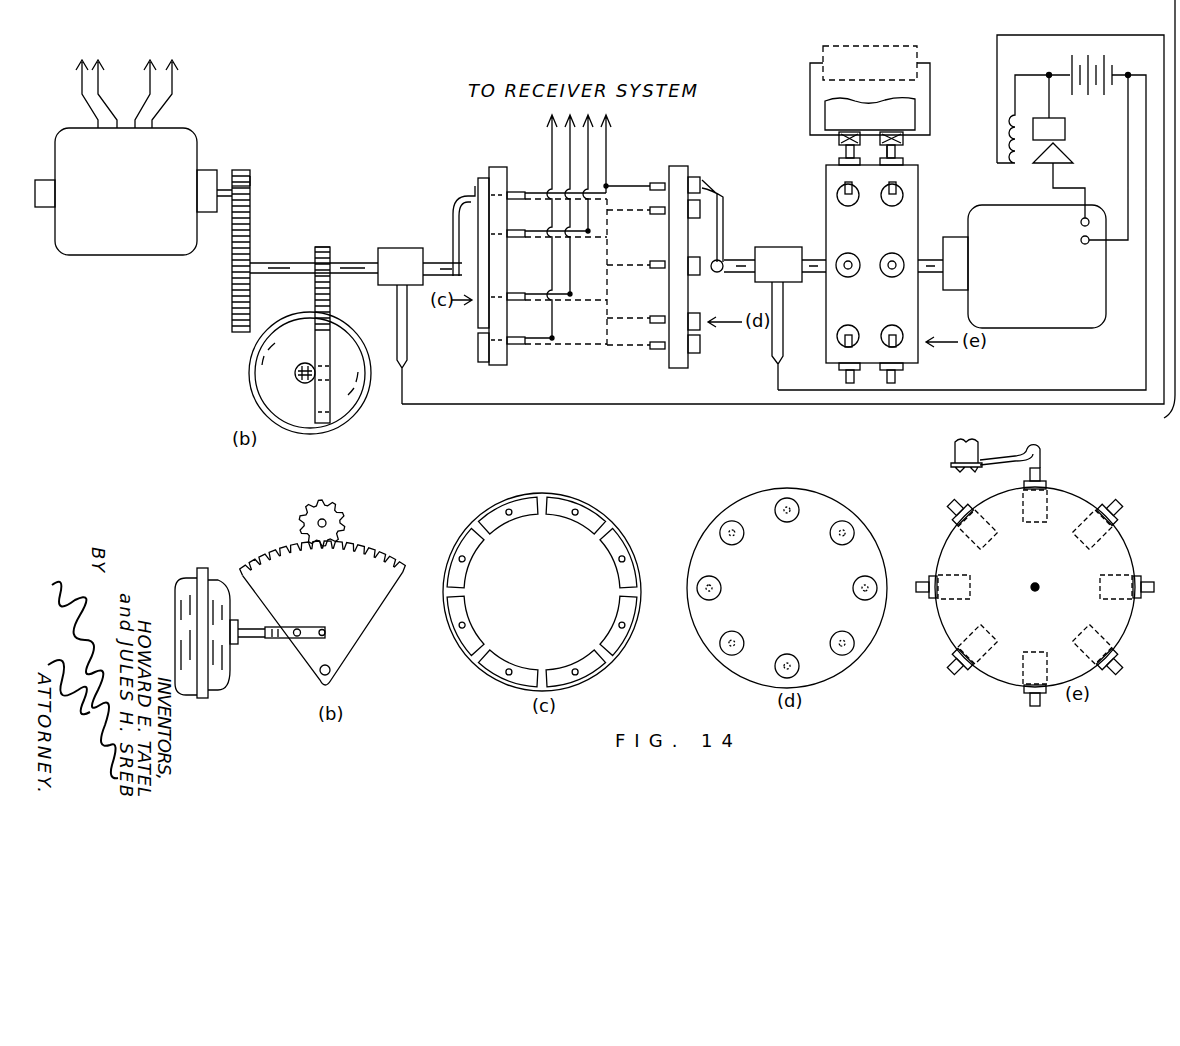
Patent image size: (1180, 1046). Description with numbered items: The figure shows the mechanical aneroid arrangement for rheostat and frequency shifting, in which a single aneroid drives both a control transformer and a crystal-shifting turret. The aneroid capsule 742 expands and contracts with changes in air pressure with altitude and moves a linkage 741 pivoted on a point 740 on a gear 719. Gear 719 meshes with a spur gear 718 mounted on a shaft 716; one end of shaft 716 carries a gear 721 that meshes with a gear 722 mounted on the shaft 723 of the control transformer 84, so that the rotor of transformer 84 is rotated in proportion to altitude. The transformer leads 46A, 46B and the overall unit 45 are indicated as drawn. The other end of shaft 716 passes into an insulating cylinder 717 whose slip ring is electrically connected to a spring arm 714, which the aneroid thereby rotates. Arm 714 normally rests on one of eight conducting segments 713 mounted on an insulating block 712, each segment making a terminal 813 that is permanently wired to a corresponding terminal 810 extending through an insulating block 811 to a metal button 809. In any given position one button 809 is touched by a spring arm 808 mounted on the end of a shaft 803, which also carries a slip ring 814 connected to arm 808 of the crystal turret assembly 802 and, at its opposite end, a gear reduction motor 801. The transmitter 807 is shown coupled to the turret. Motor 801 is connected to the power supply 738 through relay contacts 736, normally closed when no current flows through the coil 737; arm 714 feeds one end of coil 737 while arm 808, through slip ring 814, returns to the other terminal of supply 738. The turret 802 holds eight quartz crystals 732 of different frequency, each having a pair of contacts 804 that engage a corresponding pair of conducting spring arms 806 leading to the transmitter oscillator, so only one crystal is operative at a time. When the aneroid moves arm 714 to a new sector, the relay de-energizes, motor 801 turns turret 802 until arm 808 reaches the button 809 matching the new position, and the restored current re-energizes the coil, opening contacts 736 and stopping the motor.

The position indicating unit 45 is at (236, 354).
The lead 46A is at (176, 88).
The lead 46B is at (73, 88).
The control transformer 84 is at (194, 138).
The insulating block 712 is at (495, 167).
The conducting segments 713 is at (480, 180).
The spring arm 714 is at (452, 212).
The shaft 716 is at (346, 264).
The insulating cylinder 717 is at (398, 248).
The spur gear 718 is at (320, 248).
The gear 719 is at (330, 300).
The gear 721 is at (250, 229).
The gear 722 is at (250, 178).
The shaft 723 is at (237, 172).
The quartz crystals 732 is at (1075, 537).
The relay contacts 736 is at (1067, 133).
The relay coil 737 is at (1012, 140).
The power supply 738 is at (1068, 70).
The pivot point 740 is at (316, 384).
The linkage 741 is at (300, 365).
The aneroid capsule 742 is at (250, 383).
The gear reduction motor 801 is at (1010, 205).
The crystal turret assembly 802 is at (816, 200).
The shaft 803 is at (1028, 587).
The contacts 804 is at (905, 158).
The conducting spring arms 806 is at (839, 140).
The transmitter 807 is at (917, 110).
The spring arm 808 is at (725, 210).
The metal button 809 is at (698, 178).
The terminal 810 is at (662, 181).
The insulating block 811 is at (678, 166).
The terminal 813 is at (515, 191).
The slip ring 814 is at (782, 239).